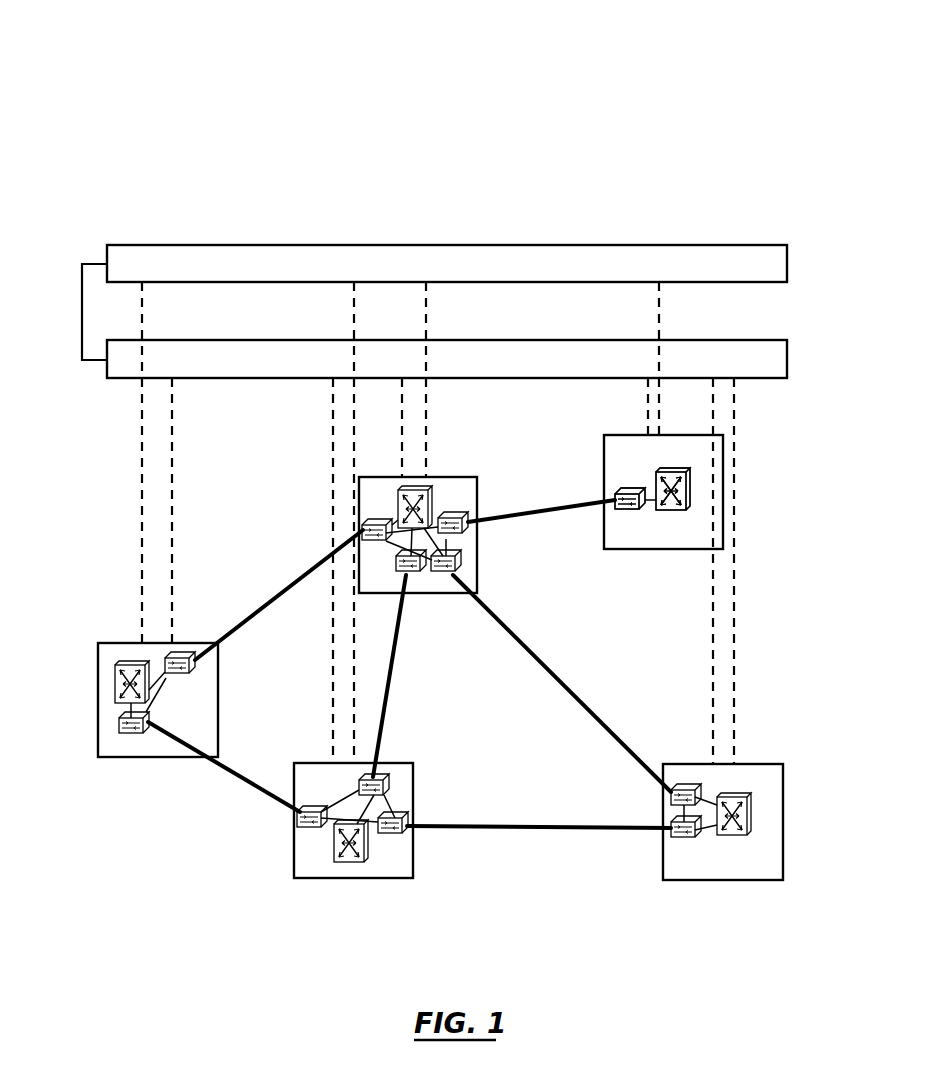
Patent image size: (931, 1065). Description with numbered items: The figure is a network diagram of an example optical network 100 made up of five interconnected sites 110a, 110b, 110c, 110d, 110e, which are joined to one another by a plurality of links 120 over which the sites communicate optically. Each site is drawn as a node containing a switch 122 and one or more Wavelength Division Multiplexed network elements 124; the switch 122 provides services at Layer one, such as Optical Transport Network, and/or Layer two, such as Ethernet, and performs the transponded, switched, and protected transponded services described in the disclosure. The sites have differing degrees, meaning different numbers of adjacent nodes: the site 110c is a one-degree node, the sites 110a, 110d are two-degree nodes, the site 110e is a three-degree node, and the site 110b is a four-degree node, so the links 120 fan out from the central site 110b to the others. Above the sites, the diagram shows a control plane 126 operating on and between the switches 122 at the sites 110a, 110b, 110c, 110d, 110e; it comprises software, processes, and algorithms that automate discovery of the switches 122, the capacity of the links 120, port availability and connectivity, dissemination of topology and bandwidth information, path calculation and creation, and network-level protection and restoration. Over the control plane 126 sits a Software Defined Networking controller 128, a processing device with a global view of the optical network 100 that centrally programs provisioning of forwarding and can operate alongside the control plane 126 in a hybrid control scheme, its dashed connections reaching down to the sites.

The optical network 100 is at (512, 77).
The site 110a is at (98, 730).
The site 110b is at (446, 477).
The site 110c is at (675, 500).
The site 110d is at (703, 880).
The site 110e is at (292, 862).
The links 120 is at (510, 512).
The switch 122 is at (678, 466).
The Wavelength Division Multiplexed network element 124 is at (631, 488).
The control plane 126 is at (575, 339).
The SDN controller 128 is at (575, 244).